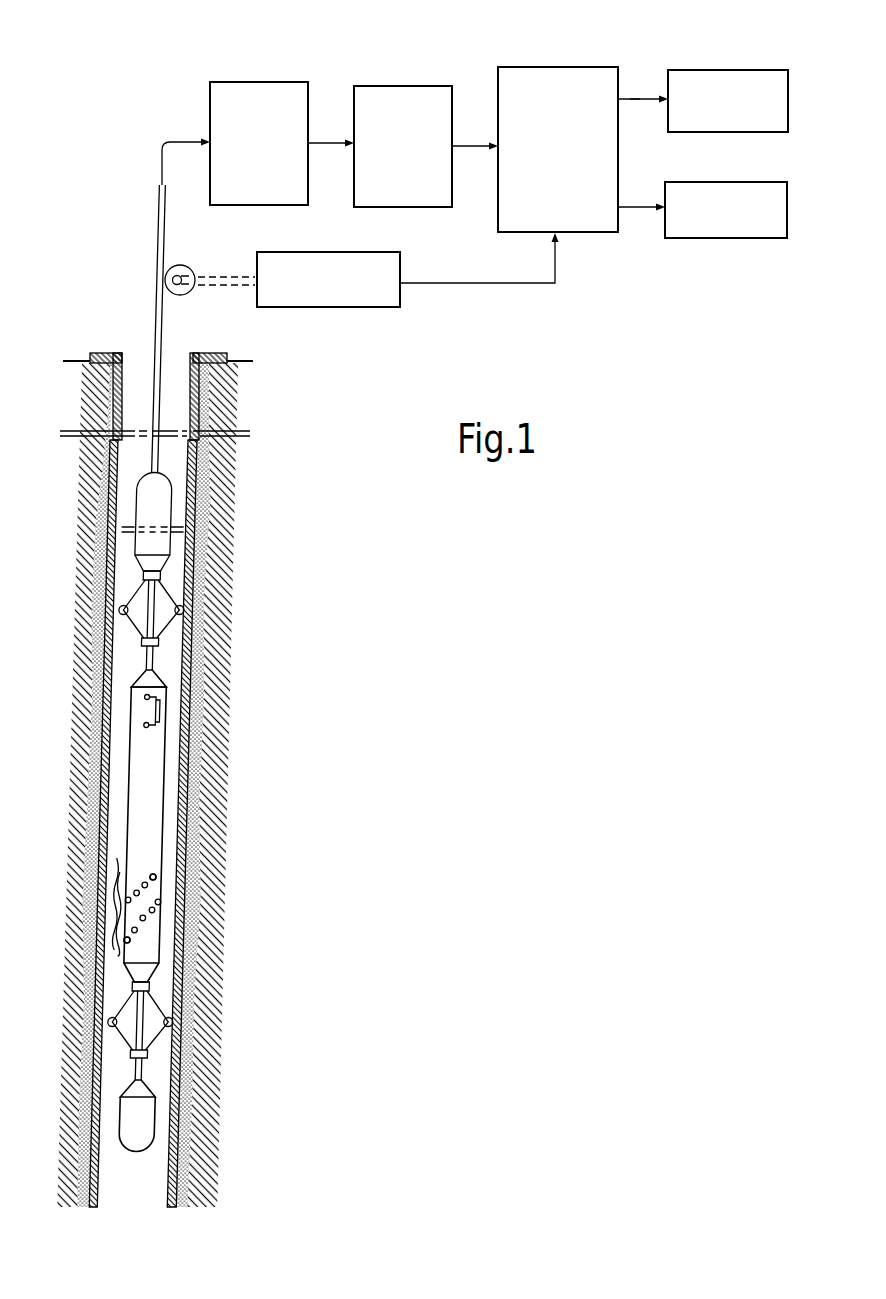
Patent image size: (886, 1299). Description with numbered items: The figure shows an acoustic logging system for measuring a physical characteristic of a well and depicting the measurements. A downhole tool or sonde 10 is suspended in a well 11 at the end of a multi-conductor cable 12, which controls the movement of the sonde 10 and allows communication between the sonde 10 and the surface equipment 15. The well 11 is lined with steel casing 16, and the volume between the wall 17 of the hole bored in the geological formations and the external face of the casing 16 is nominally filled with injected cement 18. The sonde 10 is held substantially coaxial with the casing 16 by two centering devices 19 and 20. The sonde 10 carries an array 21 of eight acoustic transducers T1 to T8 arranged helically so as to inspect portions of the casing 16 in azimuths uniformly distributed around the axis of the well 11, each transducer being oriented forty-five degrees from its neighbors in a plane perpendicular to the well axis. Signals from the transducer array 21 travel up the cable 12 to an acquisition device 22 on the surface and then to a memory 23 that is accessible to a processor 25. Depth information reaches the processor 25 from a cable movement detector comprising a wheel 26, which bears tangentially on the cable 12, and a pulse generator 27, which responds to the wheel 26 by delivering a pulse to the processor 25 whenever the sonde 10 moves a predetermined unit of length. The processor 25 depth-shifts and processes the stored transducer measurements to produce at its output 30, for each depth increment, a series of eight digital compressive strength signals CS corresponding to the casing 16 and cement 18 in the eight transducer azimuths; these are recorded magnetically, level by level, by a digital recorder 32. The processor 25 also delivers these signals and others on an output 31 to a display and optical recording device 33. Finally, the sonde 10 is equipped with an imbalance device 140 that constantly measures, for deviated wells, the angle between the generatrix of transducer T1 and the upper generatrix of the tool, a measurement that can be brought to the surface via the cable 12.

The sonde 10 is at (143, 807).
The well 11 is at (140, 412).
The multi-conductor cable 12 is at (162, 398).
The surface equipment 15 is at (172, 84).
The steel casing 16 is at (115, 472).
The wall of the hole 17 is at (100, 540).
The injected cement 18 is at (203, 577).
The centering device 19 is at (133, 590).
The centering device 20 is at (123, 1007).
The transducer array 21 is at (115, 908).
The acquisition device 22 is at (260, 97).
The memory 23 is at (397, 95).
The processor 25 is at (567, 78).
The wheel 26 is at (184, 291).
The pulse generator 27 is at (330, 308).
The output of the processor 30 is at (622, 95).
The output 31 is at (622, 210).
The digital recorder 32 is at (735, 70).
The display and optical recording device 33 is at (725, 231).
The imbalance device 140 is at (163, 708).
The acoustic transducer T8 is at (153, 877).
The acoustic transducer T1 is at (133, 940).
The compressive strength signal CS is at (635, 97).